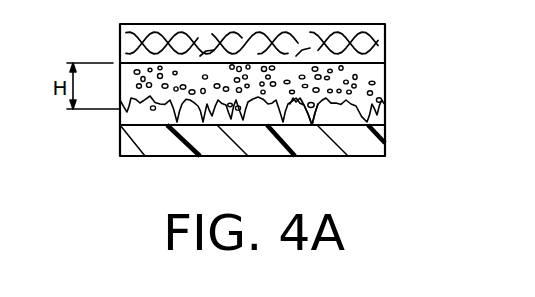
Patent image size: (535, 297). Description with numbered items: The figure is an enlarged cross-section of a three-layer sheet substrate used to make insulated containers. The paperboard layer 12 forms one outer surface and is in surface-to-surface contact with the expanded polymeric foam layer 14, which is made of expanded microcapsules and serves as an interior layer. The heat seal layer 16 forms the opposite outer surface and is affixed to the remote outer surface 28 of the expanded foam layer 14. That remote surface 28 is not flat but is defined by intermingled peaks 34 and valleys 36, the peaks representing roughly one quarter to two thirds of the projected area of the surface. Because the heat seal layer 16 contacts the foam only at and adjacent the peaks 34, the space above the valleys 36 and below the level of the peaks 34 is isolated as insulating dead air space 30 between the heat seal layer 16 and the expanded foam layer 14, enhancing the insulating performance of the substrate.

The paperboard layer 12 is at (385, 42).
The expanded polymeric foam layer 14 is at (286, 131).
The heat seal layer 16 is at (385, 148).
The remote outer surface 28 is at (202, 116).
The insulating dead air space 30 is at (152, 112).
The peaks 34 is at (294, 96).
The valleys 36 is at (238, 112).